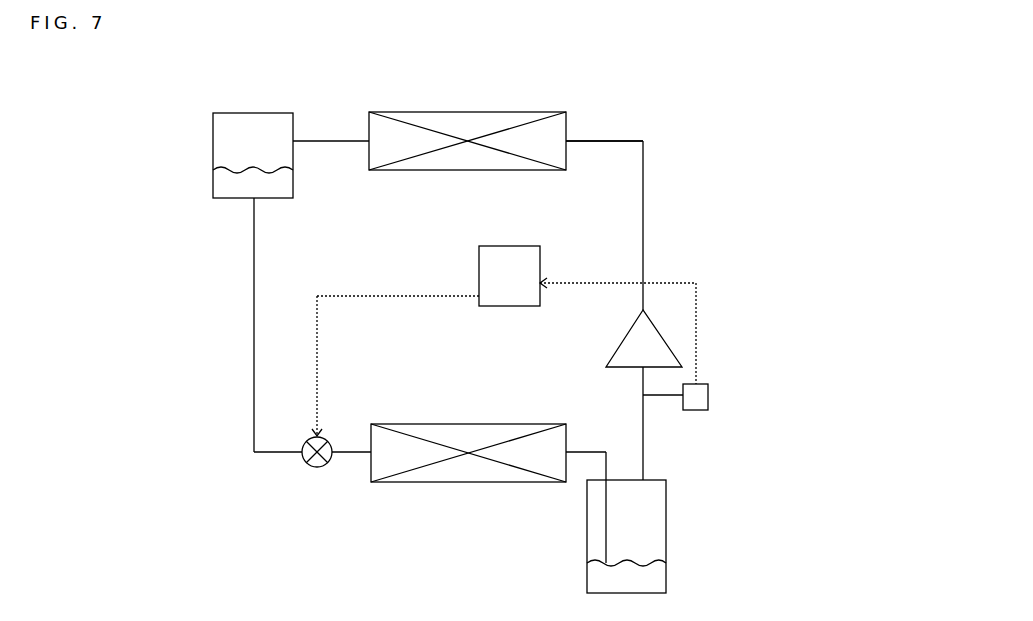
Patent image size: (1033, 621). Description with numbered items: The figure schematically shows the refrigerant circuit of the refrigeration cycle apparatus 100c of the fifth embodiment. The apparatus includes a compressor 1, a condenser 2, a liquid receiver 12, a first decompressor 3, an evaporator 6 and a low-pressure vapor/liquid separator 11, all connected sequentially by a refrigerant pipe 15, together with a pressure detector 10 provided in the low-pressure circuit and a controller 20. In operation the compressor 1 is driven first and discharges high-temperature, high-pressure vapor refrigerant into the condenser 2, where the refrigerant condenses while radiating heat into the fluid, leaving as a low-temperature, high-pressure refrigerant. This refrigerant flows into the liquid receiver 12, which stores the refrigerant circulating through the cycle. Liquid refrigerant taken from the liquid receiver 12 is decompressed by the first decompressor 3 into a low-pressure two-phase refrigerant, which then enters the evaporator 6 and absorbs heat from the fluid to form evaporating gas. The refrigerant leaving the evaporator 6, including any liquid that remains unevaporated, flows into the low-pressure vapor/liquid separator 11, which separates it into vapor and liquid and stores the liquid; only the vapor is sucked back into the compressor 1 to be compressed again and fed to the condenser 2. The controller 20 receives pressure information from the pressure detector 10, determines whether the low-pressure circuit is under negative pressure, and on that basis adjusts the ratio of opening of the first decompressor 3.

The refrigeration cycle apparatus 100c is at (183, 156).
The compressor 1 is at (627, 367).
The condenser 2 is at (497, 112).
The first decompressor 3 is at (309, 467).
The evaporator 6 is at (452, 482).
The pressure detector 10 is at (700, 384).
The low-pressure vapor/liquid separator 11 is at (666, 508).
The liquid receiver 12 is at (252, 113).
The refrigerant pipe 15 is at (603, 141).
The controller 20 is at (508, 246).